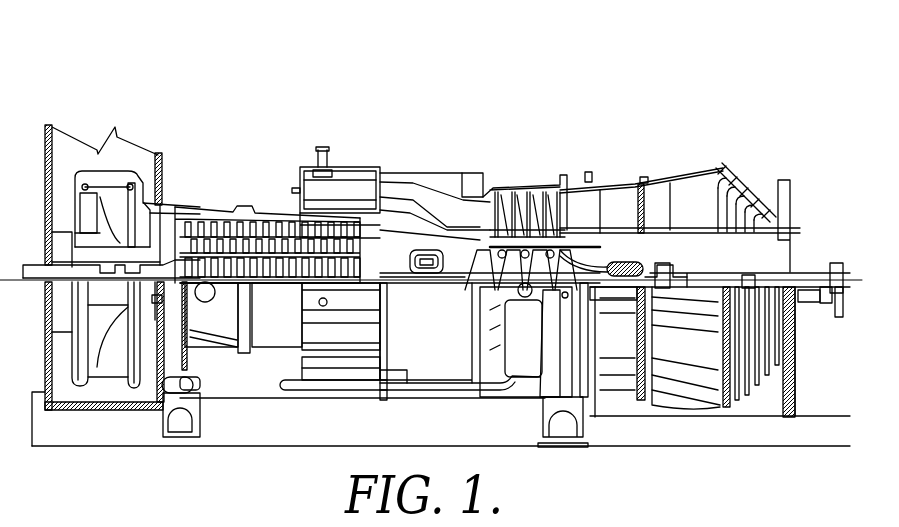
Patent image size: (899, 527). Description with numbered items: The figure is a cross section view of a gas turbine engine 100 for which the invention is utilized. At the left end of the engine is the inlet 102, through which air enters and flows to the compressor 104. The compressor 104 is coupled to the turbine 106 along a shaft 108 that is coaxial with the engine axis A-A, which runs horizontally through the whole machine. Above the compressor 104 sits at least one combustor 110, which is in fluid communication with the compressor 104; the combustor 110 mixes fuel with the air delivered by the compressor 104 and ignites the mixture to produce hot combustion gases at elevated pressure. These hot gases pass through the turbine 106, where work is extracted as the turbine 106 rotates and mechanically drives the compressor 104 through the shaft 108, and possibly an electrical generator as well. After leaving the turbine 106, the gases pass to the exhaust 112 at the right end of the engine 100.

The gas turbine engine 100 is at (587, 84).
The inlet 102 is at (106, 117).
The compressor 104 is at (228, 189).
The turbine 106 is at (521, 172).
The shaft 108 is at (810, 275).
The combustor 110 is at (379, 147).
The exhaust 112 is at (741, 159).